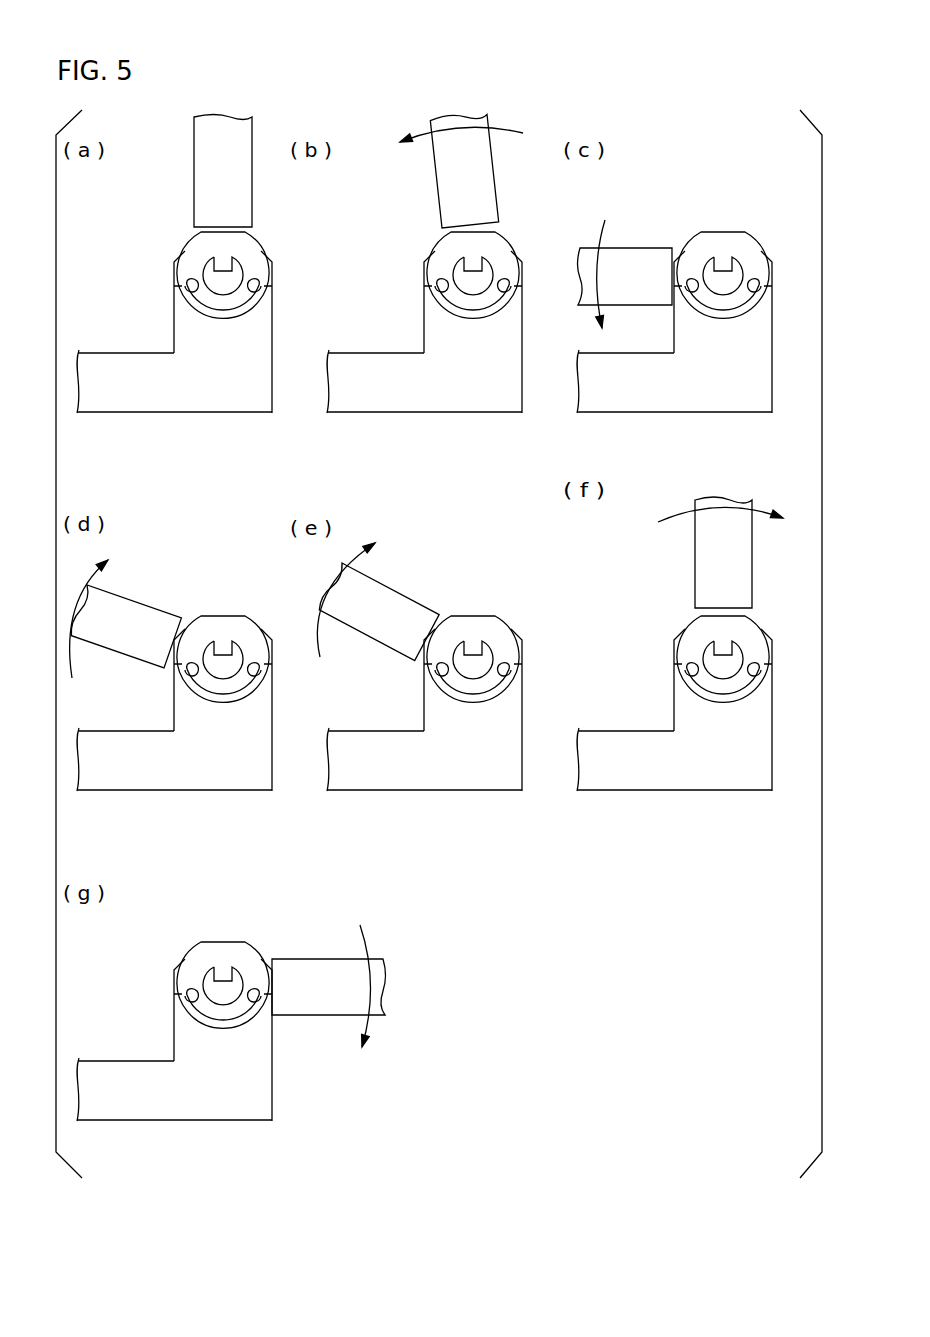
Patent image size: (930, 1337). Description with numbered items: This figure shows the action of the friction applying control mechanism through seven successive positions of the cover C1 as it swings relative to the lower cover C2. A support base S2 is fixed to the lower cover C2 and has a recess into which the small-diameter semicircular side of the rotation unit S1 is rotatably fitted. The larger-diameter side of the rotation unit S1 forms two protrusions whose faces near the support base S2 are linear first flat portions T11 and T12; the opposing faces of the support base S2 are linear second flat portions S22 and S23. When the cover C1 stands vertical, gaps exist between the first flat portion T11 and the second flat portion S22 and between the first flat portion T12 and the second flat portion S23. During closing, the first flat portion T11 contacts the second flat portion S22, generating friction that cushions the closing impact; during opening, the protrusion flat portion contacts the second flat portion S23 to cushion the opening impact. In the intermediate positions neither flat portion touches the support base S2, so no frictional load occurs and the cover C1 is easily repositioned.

The cover C1 is at (426, 579).
The lower cover C2 is at (424, 760).
The rotation unit S1 is at (491, 629).
The support base S2 is at (489, 686).
The second flat portion S22 is at (421, 661).
The second flat portion S23 is at (517, 673).
The first flat portion T11 is at (398, 644).
The first flat portion T12 is at (531, 658).